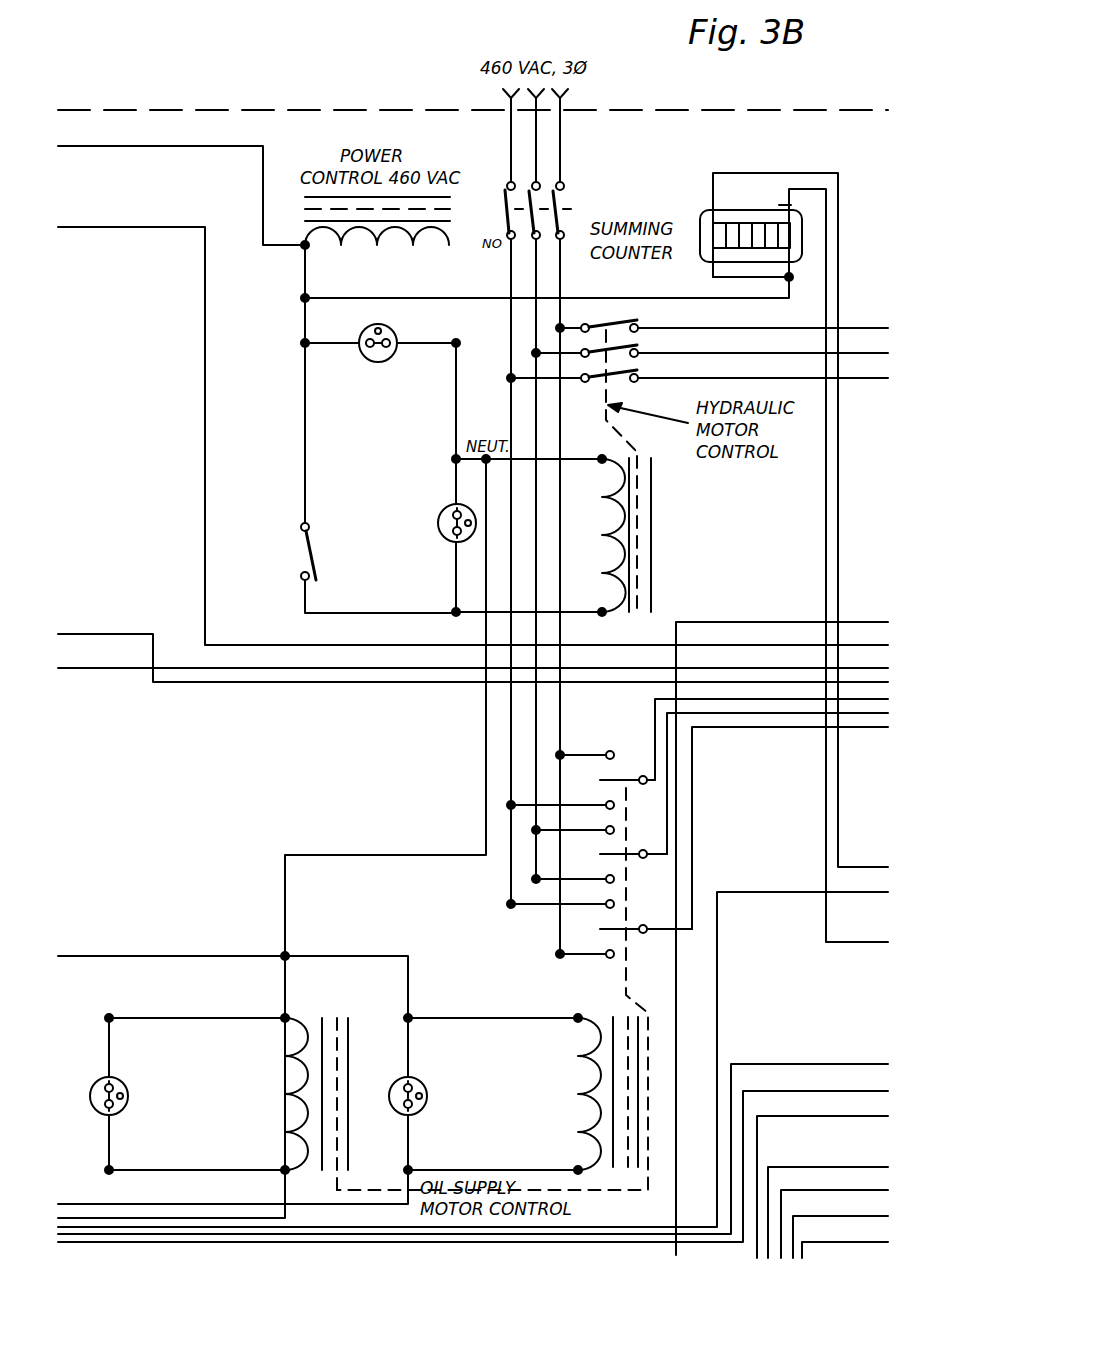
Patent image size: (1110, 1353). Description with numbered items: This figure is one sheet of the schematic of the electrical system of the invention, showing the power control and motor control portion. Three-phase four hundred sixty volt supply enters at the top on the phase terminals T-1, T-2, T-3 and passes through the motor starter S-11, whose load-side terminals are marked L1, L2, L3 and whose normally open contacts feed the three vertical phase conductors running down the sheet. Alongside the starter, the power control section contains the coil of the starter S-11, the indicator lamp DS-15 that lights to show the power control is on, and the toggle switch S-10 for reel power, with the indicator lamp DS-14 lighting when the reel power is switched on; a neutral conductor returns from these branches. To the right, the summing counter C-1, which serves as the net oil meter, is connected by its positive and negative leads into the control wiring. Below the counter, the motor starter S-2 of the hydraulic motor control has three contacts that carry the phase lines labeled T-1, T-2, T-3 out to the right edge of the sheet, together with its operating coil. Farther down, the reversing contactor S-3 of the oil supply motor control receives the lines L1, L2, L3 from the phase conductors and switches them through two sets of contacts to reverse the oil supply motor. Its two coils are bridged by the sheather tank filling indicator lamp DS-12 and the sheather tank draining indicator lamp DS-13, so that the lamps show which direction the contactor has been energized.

The motor starter S-11 is at (517, 521).
The toggle switch S-10 is at (358, 560).
The motor starter S-2 is at (672, 468).
The contactor S-3 is at (514, 970).
The indicator lamp DS-15 is at (380, 355).
The indicator lamp DS-14 is at (440, 526).
The sheather tank filling indicator lamp DS-12 is at (219, 1102).
The sheather tank draining indicator lamp DS-13 is at (513, 1094).
The summing counter C-1 is at (792, 557).
The phase terminal T-1 is at (576, 221).
The phase terminal T-2 is at (591, 240).
The phase terminal T-3 is at (605, 260).
The line L1 is at (512, 509).
The line L2 is at (537, 521).
The line L3 is at (563, 484).